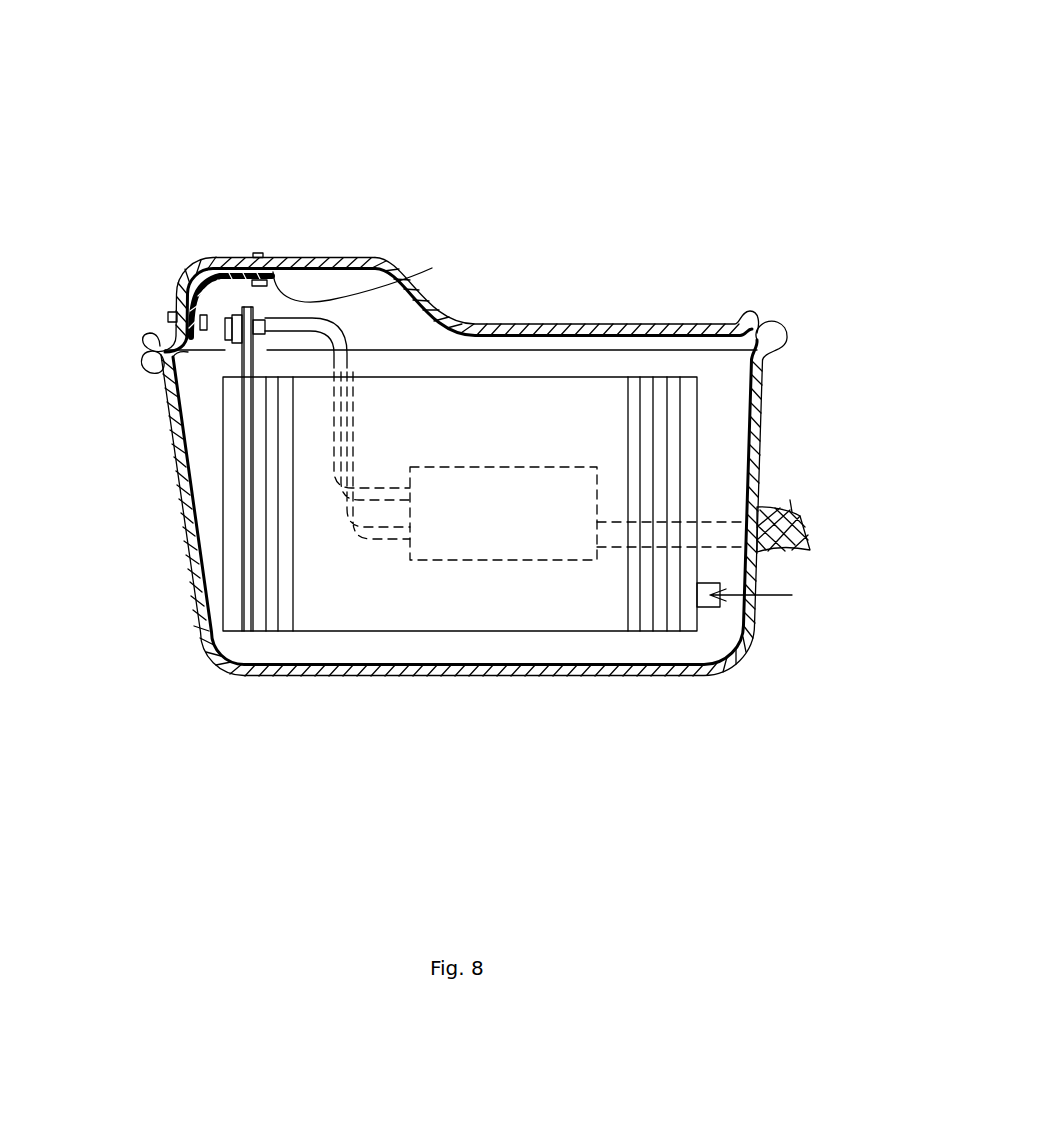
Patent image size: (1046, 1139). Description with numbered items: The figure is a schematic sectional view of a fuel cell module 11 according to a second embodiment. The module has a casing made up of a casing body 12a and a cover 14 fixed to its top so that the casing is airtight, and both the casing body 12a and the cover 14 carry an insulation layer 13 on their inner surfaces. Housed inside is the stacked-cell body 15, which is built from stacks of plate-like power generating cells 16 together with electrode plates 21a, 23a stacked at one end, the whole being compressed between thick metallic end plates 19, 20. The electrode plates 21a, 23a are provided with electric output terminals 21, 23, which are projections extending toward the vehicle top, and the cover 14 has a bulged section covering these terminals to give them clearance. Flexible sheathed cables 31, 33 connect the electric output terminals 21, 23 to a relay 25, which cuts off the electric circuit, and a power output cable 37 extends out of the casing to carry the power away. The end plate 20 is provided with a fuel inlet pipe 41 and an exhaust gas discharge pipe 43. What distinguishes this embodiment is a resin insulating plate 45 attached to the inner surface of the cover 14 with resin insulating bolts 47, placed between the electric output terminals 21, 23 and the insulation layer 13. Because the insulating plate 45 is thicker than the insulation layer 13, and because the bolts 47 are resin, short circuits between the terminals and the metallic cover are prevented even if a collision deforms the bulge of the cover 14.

The fuel cell module 11 is at (815, 308).
The casing body 12a is at (180, 508).
The insulation layer 13 is at (437, 258).
The cover 14 is at (398, 262).
The stacked-cell body 15 is at (520, 640).
The power generating cell 16 is at (293, 600).
The end plate 19 is at (232, 615).
The end plate 20 is at (688, 620).
The electric output terminal 21 is at (200, 240).
The electric output terminal 23 is at (211, 258).
The electrode plate 21a is at (257, 568).
The electrode plate 23a is at (247, 618).
The relay 25 is at (533, 465).
The sheathed cable 31 is at (446, 342).
The sheathed cable 33 is at (343, 337).
The power output cable 37 is at (798, 520).
The fuel inlet pipe 41 is at (813, 584).
The exhaust gas discharge pipe 43 is at (710, 582).
The resin insulating plate 45 is at (318, 258).
The resin insulating bolt 47 is at (352, 258).